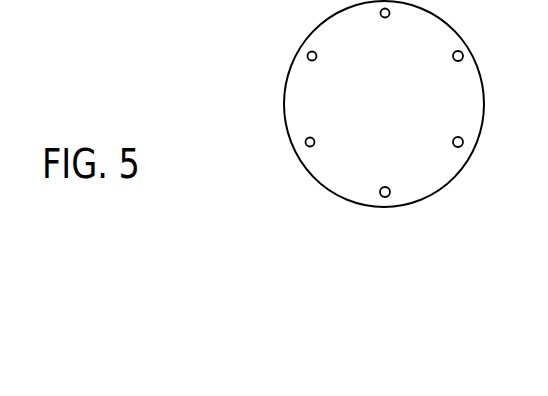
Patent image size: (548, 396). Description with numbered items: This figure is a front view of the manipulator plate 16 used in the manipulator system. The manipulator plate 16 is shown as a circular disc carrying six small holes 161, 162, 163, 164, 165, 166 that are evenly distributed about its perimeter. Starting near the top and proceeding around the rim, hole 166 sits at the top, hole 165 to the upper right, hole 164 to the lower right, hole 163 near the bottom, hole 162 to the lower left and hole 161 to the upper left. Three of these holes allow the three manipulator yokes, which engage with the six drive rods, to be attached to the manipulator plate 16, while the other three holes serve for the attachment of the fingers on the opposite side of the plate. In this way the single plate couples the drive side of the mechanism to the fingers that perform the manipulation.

The manipulator plate 16 is at (340, 196).
The hole 161 is at (316, 57).
The hole 162 is at (312, 138).
The hole 163 is at (390, 187).
The hole 164 is at (455, 138).
The hole 165 is at (458, 61).
The hole 166 is at (385, 18).